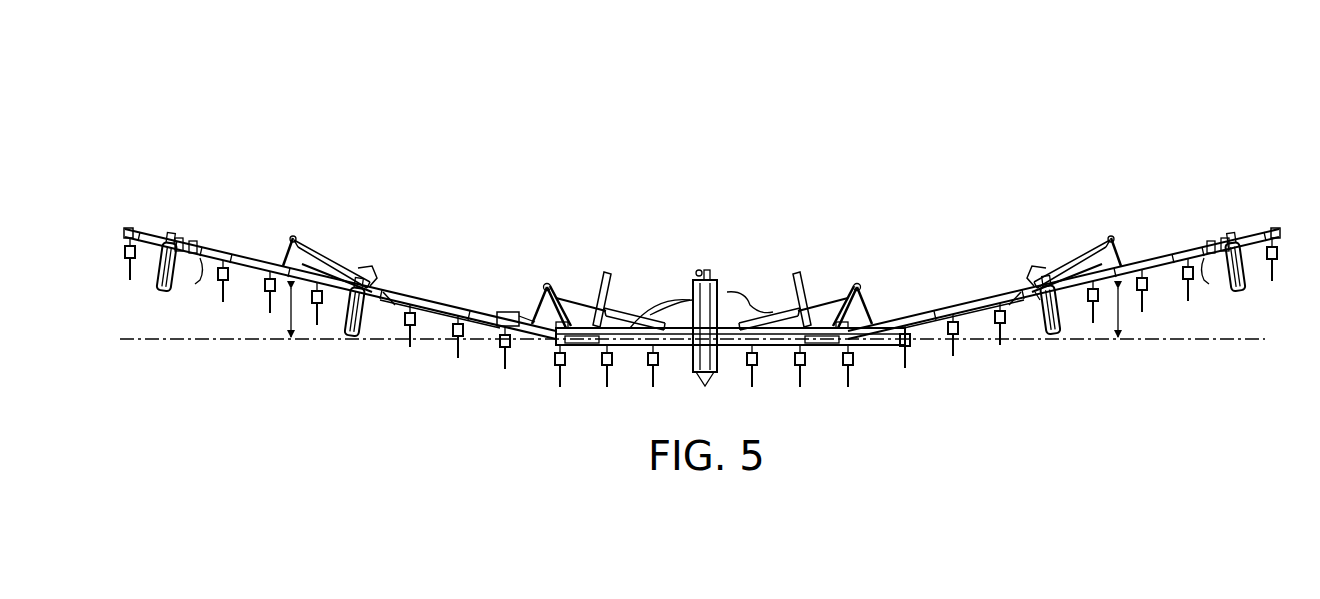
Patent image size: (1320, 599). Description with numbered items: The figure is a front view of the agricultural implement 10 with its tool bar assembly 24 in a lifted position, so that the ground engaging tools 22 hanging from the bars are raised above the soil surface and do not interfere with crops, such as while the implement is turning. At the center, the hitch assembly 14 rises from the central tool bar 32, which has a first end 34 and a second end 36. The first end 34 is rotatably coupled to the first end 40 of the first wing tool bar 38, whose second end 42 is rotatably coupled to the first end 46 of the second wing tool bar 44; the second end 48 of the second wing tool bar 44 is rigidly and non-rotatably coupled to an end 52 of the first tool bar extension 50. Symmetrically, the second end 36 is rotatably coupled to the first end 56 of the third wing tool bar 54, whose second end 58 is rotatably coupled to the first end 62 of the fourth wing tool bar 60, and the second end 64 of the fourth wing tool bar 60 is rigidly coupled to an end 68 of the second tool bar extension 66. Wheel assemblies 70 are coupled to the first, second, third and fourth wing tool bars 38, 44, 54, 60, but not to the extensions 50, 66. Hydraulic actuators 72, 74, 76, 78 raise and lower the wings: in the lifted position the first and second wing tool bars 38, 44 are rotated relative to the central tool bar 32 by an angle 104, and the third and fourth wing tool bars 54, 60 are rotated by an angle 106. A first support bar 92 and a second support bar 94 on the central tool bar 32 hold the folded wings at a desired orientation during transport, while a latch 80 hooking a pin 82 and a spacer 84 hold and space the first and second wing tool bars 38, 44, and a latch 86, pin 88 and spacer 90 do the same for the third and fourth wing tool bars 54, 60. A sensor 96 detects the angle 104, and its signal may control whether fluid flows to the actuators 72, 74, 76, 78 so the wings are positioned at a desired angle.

The agricultural implement 10 is at (181, 104).
The hitch assembly 14 is at (712, 282).
The ground engaging tools 22 is at (259, 314).
The tool bar assembly 24 is at (722, 318).
The central tool bar 32 is at (631, 347).
The first end of the central tool bar 34 is at (518, 320).
The second end of the central tool bar 36 is at (835, 345).
The first wing tool bar 38 is at (397, 302).
The first end of the first wing tool bar 40 is at (503, 318).
The second end of the first wing tool bar 42 is at (306, 270).
The second wing tool bar 44 is at (208, 252).
The first end of the second wing tool bar 46 is at (283, 263).
The second end of the second wing tool bar 48 is at (186, 250).
The first tool bar extension 50 is at (152, 234).
The end of the first tool bar extension 52 is at (166, 241).
The third wing tool bar 54 is at (968, 310).
The first end of the third wing tool bar 56 is at (862, 335).
The second end of the third wing tool bar 58 is at (1123, 318).
The fourth wing tool bar 60 is at (1204, 245).
The first end of the fourth wing tool bar 62 is at (1116, 265).
The second end of the fourth wing tool bar 64 is at (1230, 240).
The second tool bar extension 66 is at (1252, 255).
The end of the second tool bar extension 68 is at (1243, 240).
The wheel assemblies 70 is at (166, 284).
The actuator 72 is at (636, 305).
The actuator 74 is at (772, 295).
The actuator 76 is at (344, 273).
The actuator 78 is at (1045, 270).
The latch 80 is at (370, 275).
The pin 82 is at (200, 258).
The spacer 84 is at (387, 297).
The latch 86 is at (1033, 265).
The pin 88 is at (1206, 268).
The spacer 90 is at (1033, 294).
The first support bar 92 is at (617, 300).
The second support bar 94 is at (806, 278).
The sensor 96 is at (553, 343).
The angle 104 is at (289, 316).
The angle 106 is at (1112, 325).